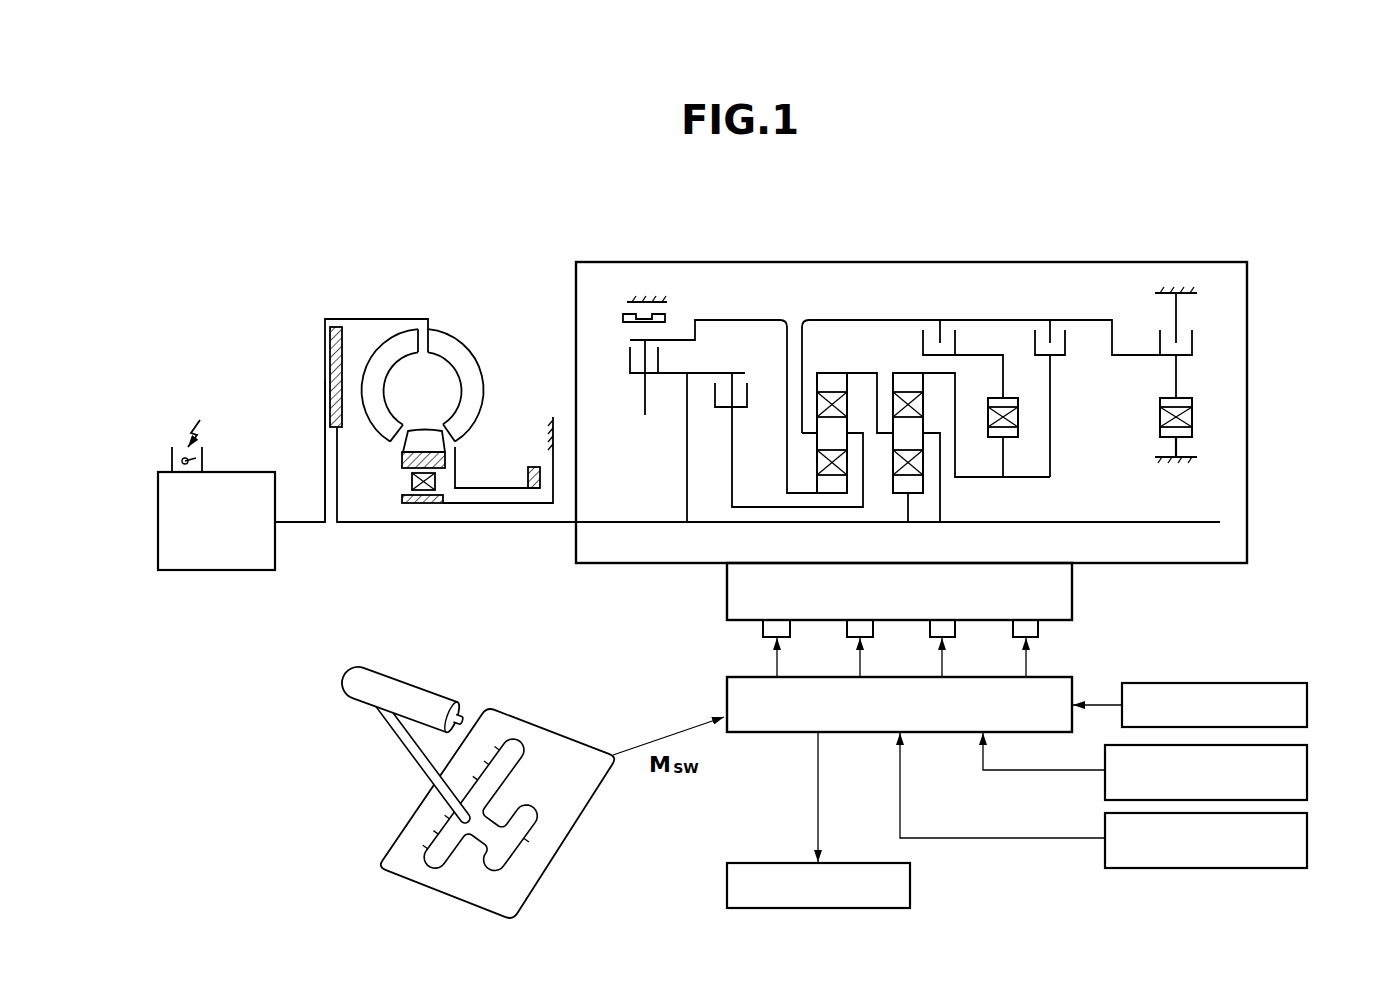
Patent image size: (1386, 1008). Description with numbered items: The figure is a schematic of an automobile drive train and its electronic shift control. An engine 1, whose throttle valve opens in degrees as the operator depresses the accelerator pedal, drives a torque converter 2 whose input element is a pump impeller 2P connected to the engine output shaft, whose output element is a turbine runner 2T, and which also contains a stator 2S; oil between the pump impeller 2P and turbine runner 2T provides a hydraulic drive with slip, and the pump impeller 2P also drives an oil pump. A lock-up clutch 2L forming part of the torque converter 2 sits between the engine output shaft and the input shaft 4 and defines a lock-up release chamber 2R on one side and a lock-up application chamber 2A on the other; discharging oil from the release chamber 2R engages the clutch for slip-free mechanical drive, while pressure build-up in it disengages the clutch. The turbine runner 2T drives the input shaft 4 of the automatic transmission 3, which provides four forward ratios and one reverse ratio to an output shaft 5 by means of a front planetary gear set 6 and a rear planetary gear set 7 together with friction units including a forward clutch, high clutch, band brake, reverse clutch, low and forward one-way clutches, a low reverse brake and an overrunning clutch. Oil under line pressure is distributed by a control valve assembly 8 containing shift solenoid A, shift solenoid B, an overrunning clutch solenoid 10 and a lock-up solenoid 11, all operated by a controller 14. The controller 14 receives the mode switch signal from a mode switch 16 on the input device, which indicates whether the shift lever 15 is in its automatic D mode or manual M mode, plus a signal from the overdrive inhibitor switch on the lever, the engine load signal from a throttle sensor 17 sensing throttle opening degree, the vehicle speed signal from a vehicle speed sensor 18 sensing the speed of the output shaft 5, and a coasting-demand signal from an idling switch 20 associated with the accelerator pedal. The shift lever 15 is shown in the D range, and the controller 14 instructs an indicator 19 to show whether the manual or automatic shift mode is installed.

The engine 1 is at (245, 472).
The torque converter 2 is at (411, 375).
The turbine runner 2T is at (380, 345).
The lock-up application chamber 2A is at (442, 372).
The pump impeller 2P is at (478, 370).
The stator 2S is at (428, 442).
The torque converter lock-up clutch 2L is at (330, 355).
The lock-up release chamber 2R is at (325, 449).
The automatic transmission 3 is at (576, 288).
The input shaft 4 is at (528, 523).
The output shaft 5 is at (1182, 522).
The front planetary gear set 6 is at (827, 371).
The rear planetary gear set 7 is at (905, 371).
The control valve assembly 8 is at (727, 593).
The overrunning clutch solenoid 10 is at (847, 637).
The lock-up solenoid 11 is at (763, 637).
The shift solenoid A is at (930, 637).
The shift solenoid B is at (1013, 637).
The controller 14 is at (727, 695).
The shift lever 15 is at (389, 742).
The mode switch 16 is at (530, 716).
The throttle sensor 17 is at (1308, 770).
The vehicle speed sensor 18 is at (1308, 840).
The indicator 19 is at (912, 883).
The idling switch 20 is at (1308, 703).